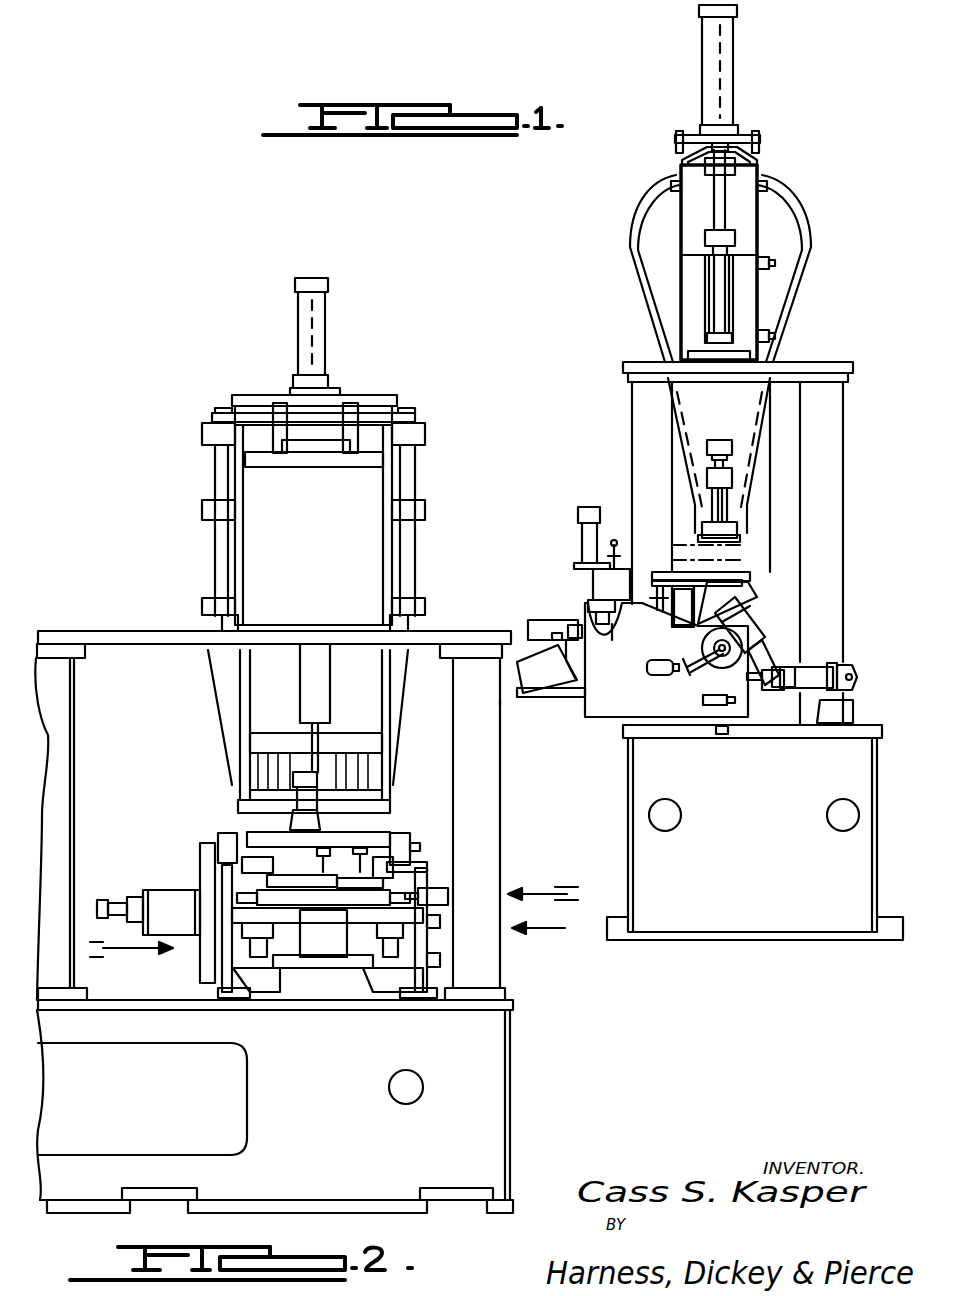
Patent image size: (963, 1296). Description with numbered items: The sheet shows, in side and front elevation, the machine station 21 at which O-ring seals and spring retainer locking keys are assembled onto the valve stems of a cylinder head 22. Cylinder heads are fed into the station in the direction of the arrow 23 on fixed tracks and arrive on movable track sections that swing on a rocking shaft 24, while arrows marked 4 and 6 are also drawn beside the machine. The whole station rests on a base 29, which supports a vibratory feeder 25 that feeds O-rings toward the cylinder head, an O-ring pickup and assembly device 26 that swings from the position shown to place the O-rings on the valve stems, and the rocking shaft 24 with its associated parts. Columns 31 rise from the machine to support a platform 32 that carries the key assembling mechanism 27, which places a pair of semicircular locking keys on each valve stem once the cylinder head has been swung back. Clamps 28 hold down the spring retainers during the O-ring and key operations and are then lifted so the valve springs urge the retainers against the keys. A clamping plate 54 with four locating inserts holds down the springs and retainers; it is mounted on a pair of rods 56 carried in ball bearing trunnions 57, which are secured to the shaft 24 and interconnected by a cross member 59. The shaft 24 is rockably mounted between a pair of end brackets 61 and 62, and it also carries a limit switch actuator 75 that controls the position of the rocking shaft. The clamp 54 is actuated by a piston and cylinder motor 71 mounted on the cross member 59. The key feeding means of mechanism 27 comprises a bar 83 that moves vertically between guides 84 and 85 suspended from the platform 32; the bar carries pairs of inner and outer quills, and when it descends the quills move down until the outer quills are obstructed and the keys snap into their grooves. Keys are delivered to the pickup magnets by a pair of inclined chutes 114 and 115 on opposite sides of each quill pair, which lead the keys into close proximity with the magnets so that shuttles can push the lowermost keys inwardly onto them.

In FIG. 1, the direction of movement arrow 4 is at (543, 872).
In FIG. 2, the direction of movement arrow 6 is at (131, 970).
In FIG. 2, the machine station 21 is at (550, 1003).
In FIG. 1, the cylinder head 22 is at (748, 589).
In FIG. 1, the arrow 23 is at (541, 930).
In FIG. 1, the rocking shaft 24 is at (712, 667).
In FIG. 1, the vibratory feeder 25 is at (548, 682).
In FIG. 1, the O-ring pickup and assembly device 26 is at (560, 563).
In FIG. 2, the key assembling mechanism 27 is at (436, 484).
In FIG. 1, the clamps 28 is at (733, 570).
In FIG. 1, the base 29 is at (783, 917).
In FIG. 2, the base 29 is at (463, 1155).
In FIG. 1, the columns 31 is at (827, 451).
In FIG. 2, the columns 31 is at (483, 798).
In FIG. 1, the platform 32 is at (822, 362).
In FIG. 2, the platform 32 is at (122, 630).
In FIG. 2, the clamping plate 54 is at (373, 840).
In FIG. 1, the rods 56 is at (682, 582).
In FIG. 2, the rods 56 is at (250, 833).
In FIG. 1, the ball bearing trunnions 57 is at (684, 607).
In FIG. 2, the ball bearing trunnions 57 is at (253, 877).
In FIG. 2, the cross member 59 is at (287, 873).
In FIG. 2, the end bracket 61 is at (222, 970).
In FIG. 2, the end bracket 62 is at (432, 973).
In FIG. 2, the piston and cylinder motor 71 is at (323, 933).
In FIG. 1, the limit switch actuator 75 is at (698, 656).
In FIG. 2, the bar 83 is at (337, 740).
In FIG. 2, the guide 84 is at (217, 690).
In FIG. 2, the guide 85 is at (408, 690).
In FIG. 1, the inclined chute 114 is at (632, 226).
In FIG. 1, the inclined chute 115 is at (808, 206).